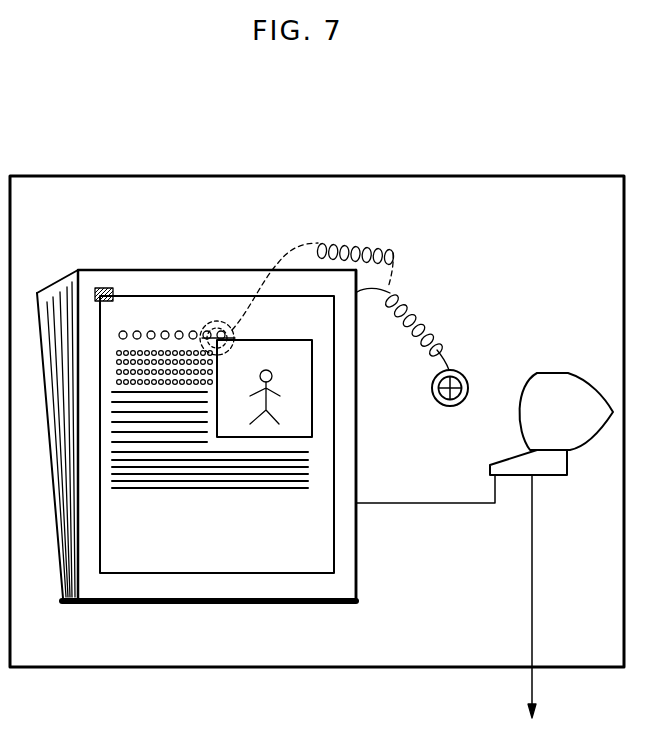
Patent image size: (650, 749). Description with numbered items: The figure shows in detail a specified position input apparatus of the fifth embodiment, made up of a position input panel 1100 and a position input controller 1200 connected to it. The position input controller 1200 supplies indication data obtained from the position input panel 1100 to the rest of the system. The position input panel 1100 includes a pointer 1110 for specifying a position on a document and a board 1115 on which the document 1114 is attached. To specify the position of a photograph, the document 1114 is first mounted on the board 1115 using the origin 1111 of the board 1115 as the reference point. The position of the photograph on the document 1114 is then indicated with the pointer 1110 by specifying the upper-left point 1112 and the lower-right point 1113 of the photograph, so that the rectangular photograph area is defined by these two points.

The position input panel 1100 is at (137, 270).
The pointer 1110 is at (452, 367).
The origin 1111 is at (94, 288).
The upper-left point 1112 is at (222, 358).
The lower-right point 1113 is at (252, 340).
The document 1114 is at (178, 557).
The board 1115 is at (293, 585).
The position input controller 1200 is at (543, 477).